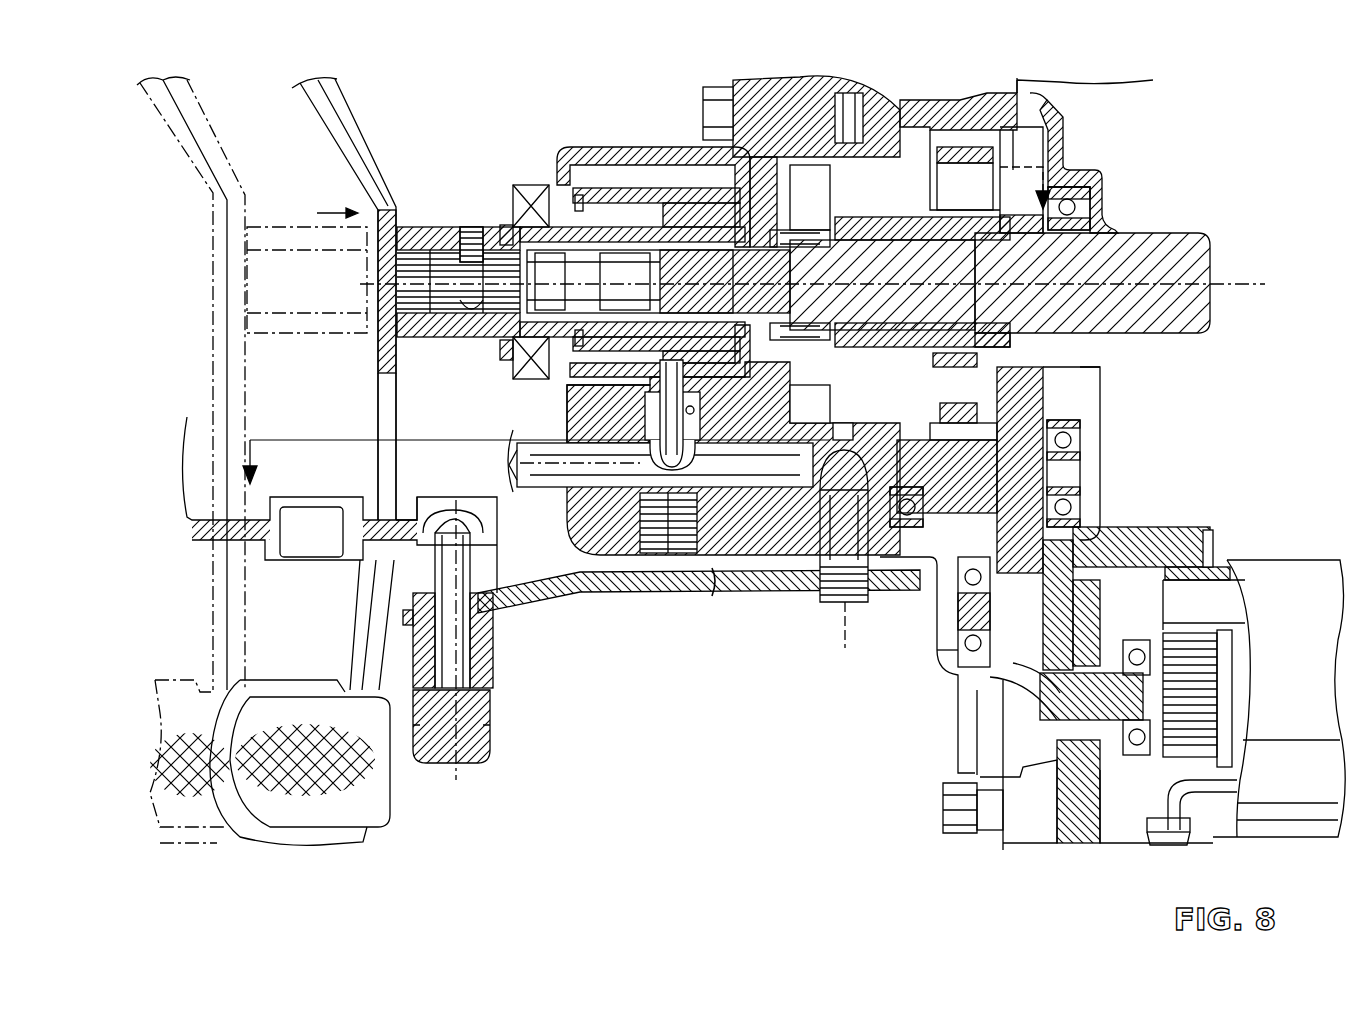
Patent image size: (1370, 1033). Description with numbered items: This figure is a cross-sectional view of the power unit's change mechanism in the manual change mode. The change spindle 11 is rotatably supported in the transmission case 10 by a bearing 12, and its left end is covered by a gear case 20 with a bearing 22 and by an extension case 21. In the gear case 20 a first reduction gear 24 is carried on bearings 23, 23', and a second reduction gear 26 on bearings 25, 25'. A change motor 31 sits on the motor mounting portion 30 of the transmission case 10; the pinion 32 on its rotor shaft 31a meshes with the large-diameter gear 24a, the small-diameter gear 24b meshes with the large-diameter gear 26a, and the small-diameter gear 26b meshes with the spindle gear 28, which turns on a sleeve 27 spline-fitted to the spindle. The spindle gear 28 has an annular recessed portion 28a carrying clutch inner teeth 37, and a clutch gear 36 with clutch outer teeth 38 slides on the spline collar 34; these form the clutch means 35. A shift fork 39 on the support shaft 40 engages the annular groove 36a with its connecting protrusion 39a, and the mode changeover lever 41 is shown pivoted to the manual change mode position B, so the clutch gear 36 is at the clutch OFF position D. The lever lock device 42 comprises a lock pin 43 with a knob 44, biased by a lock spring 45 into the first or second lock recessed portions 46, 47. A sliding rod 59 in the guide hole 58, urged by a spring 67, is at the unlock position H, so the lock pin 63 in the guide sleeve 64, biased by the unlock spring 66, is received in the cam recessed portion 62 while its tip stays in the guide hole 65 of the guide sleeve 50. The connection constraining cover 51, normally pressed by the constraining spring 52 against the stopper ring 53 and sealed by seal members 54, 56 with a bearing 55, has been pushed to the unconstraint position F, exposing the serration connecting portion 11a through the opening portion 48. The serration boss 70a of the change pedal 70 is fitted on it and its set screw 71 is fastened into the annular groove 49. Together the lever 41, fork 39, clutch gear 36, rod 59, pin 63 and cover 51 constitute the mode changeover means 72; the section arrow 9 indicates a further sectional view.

The section line IX-IX 9 is at (653, 306).
The transmission case 10 is at (262, 517).
The change spindle 11 is at (1200, 255).
The serration connecting portion 11a is at (446, 230).
The bearing 12 is at (1083, 210).
The gear case 20 is at (777, 205).
The extension case 21 is at (630, 145).
The bearing 22 is at (787, 247).
The bearing 23 is at (940, 612).
The bearing 23' is at (1159, 560).
The first reduction gear 24 is at (962, 695).
The large-diameter gear 24a is at (990, 718).
The small-diameter gear 24b is at (958, 670).
The bearing 25 is at (914, 545).
The bearing 25' is at (1107, 453).
The second reduction gear 26 is at (1112, 444).
The large-diameter gear 26a is at (1057, 400).
The small-diameter gear 26b is at (1000, 437).
The sleeve 27 is at (1020, 323).
The spindle gear 28 is at (1028, 108).
The annular recessed portion 28a is at (988, 262).
The motor mounting portion 30 is at (1120, 827).
The change motor 31 is at (1315, 712).
The rotor shaft 31a is at (1150, 695).
The pinion 32 is at (1045, 720).
The spline collar 34 is at (847, 325).
The clutch means 35 is at (803, 150).
The clutch gear 36 is at (893, 376).
The clutch OFF position D is at (978, 262).
The annular groove 36a is at (858, 415).
The clutch inner teeth 37 is at (975, 172).
The clutch outer teeth 38 is at (907, 152).
The shift fork 39 is at (880, 414).
The connecting protrusion 39a is at (890, 385).
The support shaft 40 is at (840, 103).
The mode changeover lever 41 is at (661, 613).
The manual change mode position B is at (652, 593).
The lever lock device 42 is at (413, 573).
The lock pin 43 is at (465, 547).
The knob 44 is at (490, 717).
The lock spring 45 is at (463, 520).
The first lock recessed portion 46 is at (327, 508).
The second lock recessed portion 47 is at (421, 513).
The opening portion 48 is at (515, 208).
The annular groove 49 is at (452, 342).
The guide sleeve 50 is at (613, 187).
The connection constraining cover 51 is at (440, 185).
The unconstraint position F is at (473, 225).
The constraining spring 52 is at (712, 222).
The stopper ring 53 is at (573, 198).
The seal member 54 is at (513, 350).
The bearing 55 is at (624, 310).
The seal member 56 is at (597, 312).
The guide hole 58 is at (607, 487).
The sliding rod 59 is at (673, 465).
The unlock position H is at (733, 458).
The cam recessed portion 62 is at (650, 437).
The lock pin 63 is at (565, 395).
The guide sleeve 64 is at (715, 366).
The guide hole 65 is at (675, 355).
The unlock spring 66 is at (700, 408).
The spring 67 is at (532, 445).
The change pedal 70 is at (360, 143).
The serration boss 70a is at (378, 372).
The set screw 71 is at (463, 226).
The mode changeover means 72 is at (727, 606).